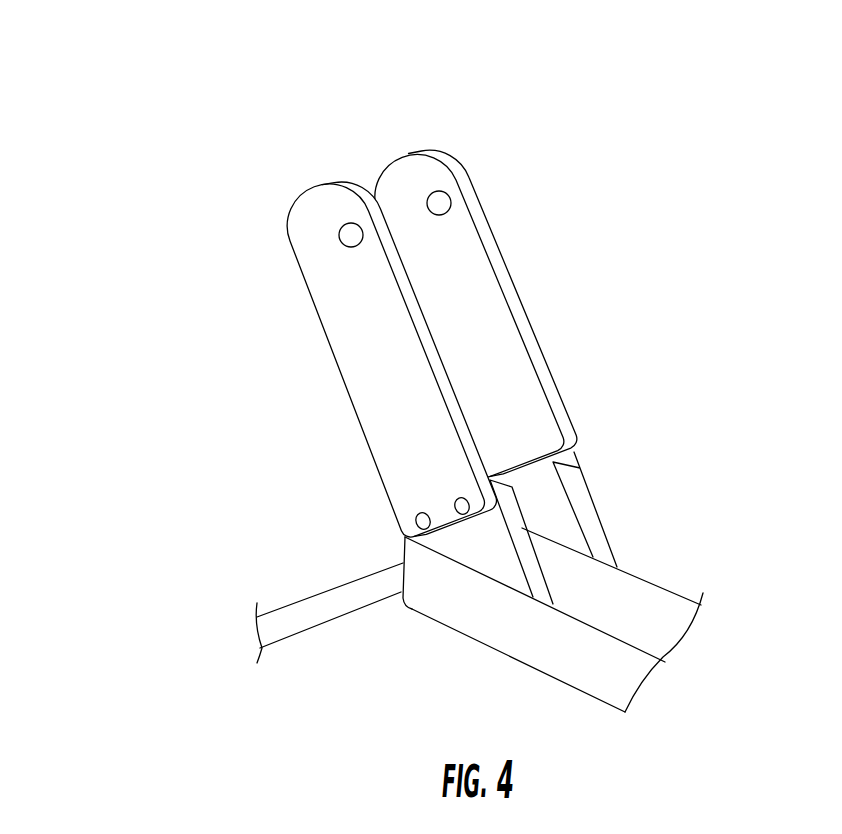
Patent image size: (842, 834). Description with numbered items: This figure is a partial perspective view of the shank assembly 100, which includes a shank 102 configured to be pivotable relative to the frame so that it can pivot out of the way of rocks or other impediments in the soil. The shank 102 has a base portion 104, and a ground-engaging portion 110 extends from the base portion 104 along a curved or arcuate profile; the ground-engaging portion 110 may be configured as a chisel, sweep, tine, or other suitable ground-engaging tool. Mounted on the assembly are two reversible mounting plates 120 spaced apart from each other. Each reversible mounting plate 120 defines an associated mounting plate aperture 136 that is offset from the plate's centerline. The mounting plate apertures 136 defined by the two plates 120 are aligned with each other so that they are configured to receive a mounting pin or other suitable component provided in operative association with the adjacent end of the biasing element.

The shank assembly 100 is at (195, 100).
The shank 102 is at (292, 528).
The base portion 104 is at (574, 665).
The ground-engaging portion 110 is at (322, 605).
The reversible mounting plate 120 is at (347, 353).
The mounting plate aperture 136 is at (346, 233).